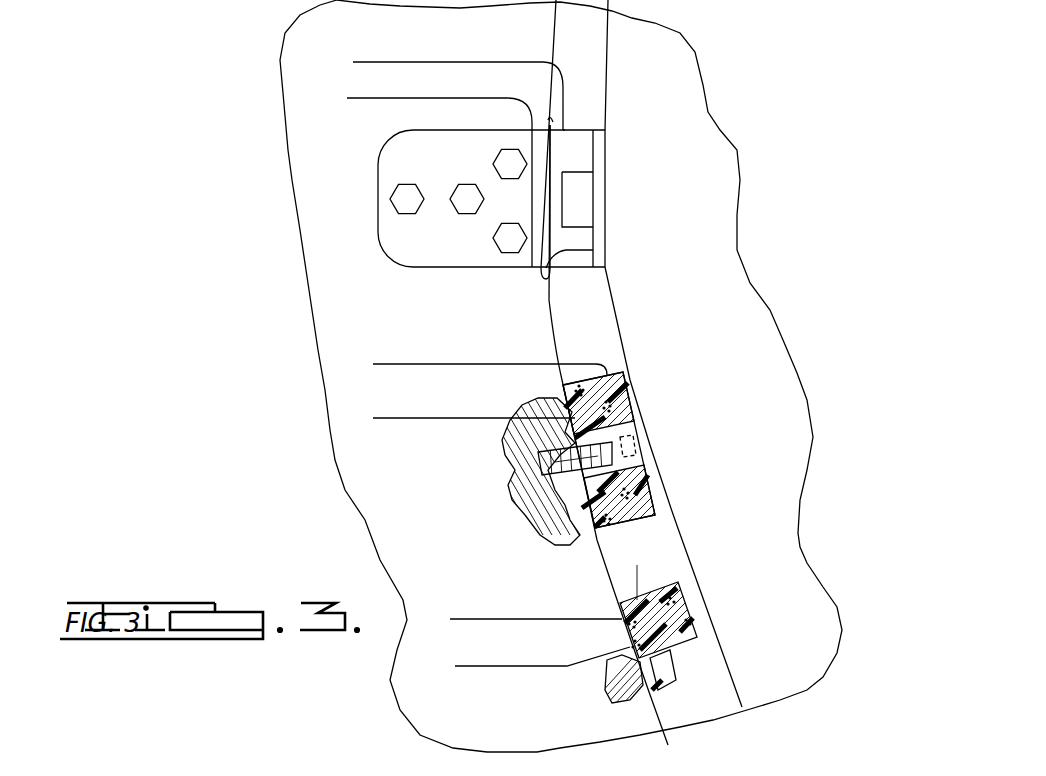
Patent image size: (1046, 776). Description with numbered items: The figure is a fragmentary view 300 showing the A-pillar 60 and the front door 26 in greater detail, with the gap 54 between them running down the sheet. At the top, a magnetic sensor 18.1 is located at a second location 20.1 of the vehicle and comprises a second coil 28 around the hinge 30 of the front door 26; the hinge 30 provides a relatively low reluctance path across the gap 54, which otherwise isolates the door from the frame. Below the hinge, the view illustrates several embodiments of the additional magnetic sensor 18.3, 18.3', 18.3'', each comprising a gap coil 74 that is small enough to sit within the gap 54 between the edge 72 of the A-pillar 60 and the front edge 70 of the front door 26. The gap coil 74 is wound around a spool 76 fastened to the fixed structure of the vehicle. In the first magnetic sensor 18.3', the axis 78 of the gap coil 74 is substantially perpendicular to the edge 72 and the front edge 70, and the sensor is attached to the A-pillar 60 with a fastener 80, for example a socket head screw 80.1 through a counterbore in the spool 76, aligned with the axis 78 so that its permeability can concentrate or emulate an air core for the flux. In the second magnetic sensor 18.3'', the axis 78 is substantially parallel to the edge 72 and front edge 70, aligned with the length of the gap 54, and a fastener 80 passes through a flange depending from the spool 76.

The fragmentary view 300 is at (205, 111).
The A-pillar 60 is at (480, 50).
The gap 54 is at (596, 48).
The second location 20.1 is at (596, 102).
The front door 26 is at (683, 202).
The hinge 30 is at (400, 170).
The second coil 28 is at (605, 268).
The magnetic sensor 18.1 is at (550, 119).
The additional magnetic sensor 18.3 is at (632, 472).
The first magnetic sensor 18.3' is at (707, 342).
The second magnetic sensor 18.3'' is at (746, 569).
The front edge 70 is at (699, 554).
The edge 72 is at (589, 576).
The gap coil 74 is at (580, 533).
The spool 76 is at (650, 497).
The axis 78 is at (660, 430).
The fastener 80 is at (670, 693).
The socket head screw 80.1 is at (632, 418).